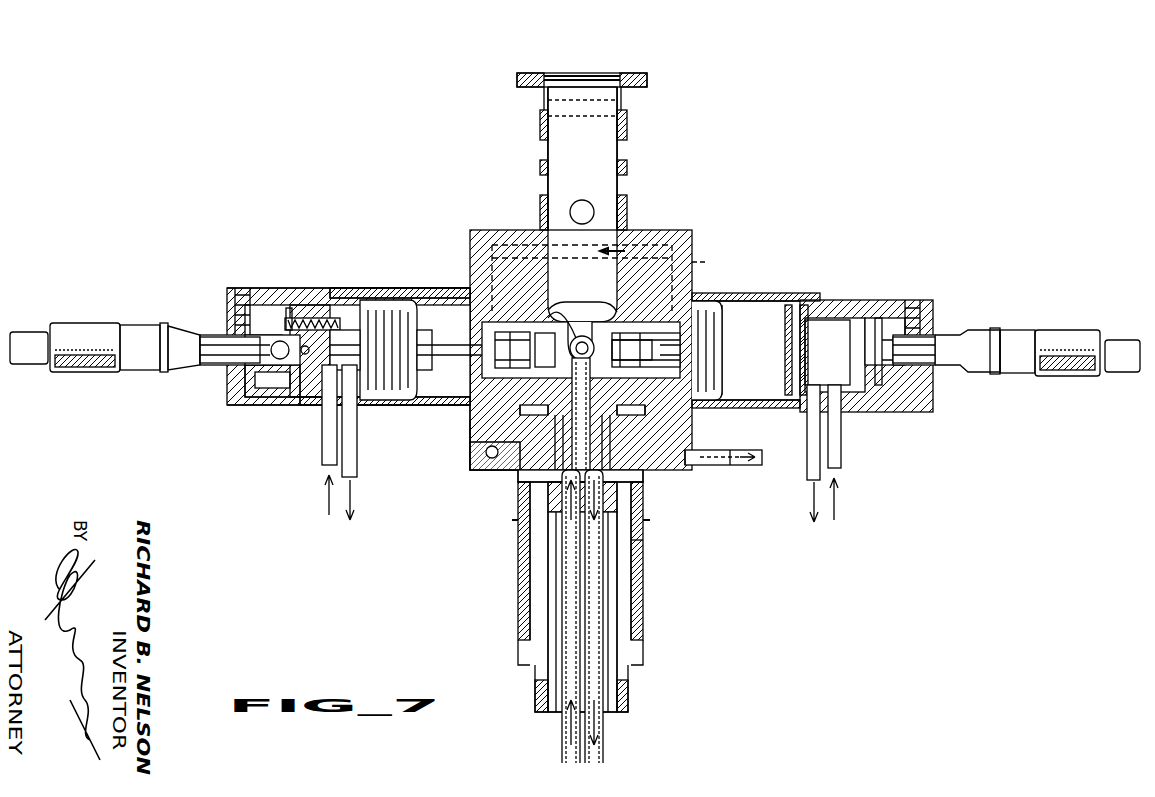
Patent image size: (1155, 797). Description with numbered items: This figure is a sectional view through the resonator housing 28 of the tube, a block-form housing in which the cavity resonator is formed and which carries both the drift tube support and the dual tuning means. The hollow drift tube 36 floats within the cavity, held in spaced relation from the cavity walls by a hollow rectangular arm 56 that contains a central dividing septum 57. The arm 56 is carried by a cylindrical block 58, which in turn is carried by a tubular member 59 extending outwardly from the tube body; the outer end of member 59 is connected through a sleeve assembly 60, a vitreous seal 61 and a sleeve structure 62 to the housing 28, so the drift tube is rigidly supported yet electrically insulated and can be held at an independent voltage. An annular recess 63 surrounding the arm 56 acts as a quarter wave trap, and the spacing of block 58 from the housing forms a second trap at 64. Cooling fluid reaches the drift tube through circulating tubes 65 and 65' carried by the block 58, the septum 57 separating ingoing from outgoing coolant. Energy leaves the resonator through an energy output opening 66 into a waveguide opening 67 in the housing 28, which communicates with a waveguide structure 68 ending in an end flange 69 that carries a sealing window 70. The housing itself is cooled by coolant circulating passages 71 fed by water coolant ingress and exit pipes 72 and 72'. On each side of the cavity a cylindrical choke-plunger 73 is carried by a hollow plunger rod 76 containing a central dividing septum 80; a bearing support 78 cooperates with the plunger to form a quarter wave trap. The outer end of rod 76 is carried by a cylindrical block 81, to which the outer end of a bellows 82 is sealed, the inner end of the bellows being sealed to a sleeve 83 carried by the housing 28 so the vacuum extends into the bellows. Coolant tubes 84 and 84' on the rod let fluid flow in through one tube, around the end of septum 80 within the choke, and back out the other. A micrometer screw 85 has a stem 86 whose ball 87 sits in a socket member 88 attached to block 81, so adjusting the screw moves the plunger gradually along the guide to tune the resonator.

The resonator housing 28 is at (495, 245).
The drift tube 36 is at (560, 318).
The hollow rectangular arm 56 is at (520, 474).
The central dividing septum 57 is at (615, 485).
The cylindrical block 58 is at (625, 500).
The tubular member 59 is at (643, 562).
The sleeve assembly 60 is at (635, 665).
The vitreous seal 61 is at (643, 605).
The sleeve structure 62 is at (518, 505).
The annular recess 63 is at (490, 422).
The second trap 64 is at (492, 440).
The circulating tube 65 is at (546, 616).
The circulating tube 65' is at (623, 616).
The energy output opening 66 is at (584, 338).
The waveguide opening 67 is at (625, 240).
The waveguide structure 68 is at (627, 168).
The end flange 69 is at (632, 75).
The sealing window 70 is at (580, 76).
The coolant circulating passages 71 is at (700, 264).
The water coolant ingress pipe 72 is at (729, 475).
The water coolant exit pipe 72' is at (708, 475).
The choke-plunger 73 is at (545, 367).
The plunger rod 76 is at (420, 360).
The bearing support 78 is at (495, 345).
The central dividing septum 80 is at (348, 330).
The cylindrical block 81 is at (370, 328).
The bellows 82 is at (395, 400).
The sleeve 83 is at (432, 292).
The coolant tube 84 is at (577, 442).
The coolant tube 84' is at (581, 443).
The micrometer screw 85 is at (140, 325).
The stem 86 is at (218, 340).
The ball 87 is at (289, 310).
The socket member 88 is at (308, 318).